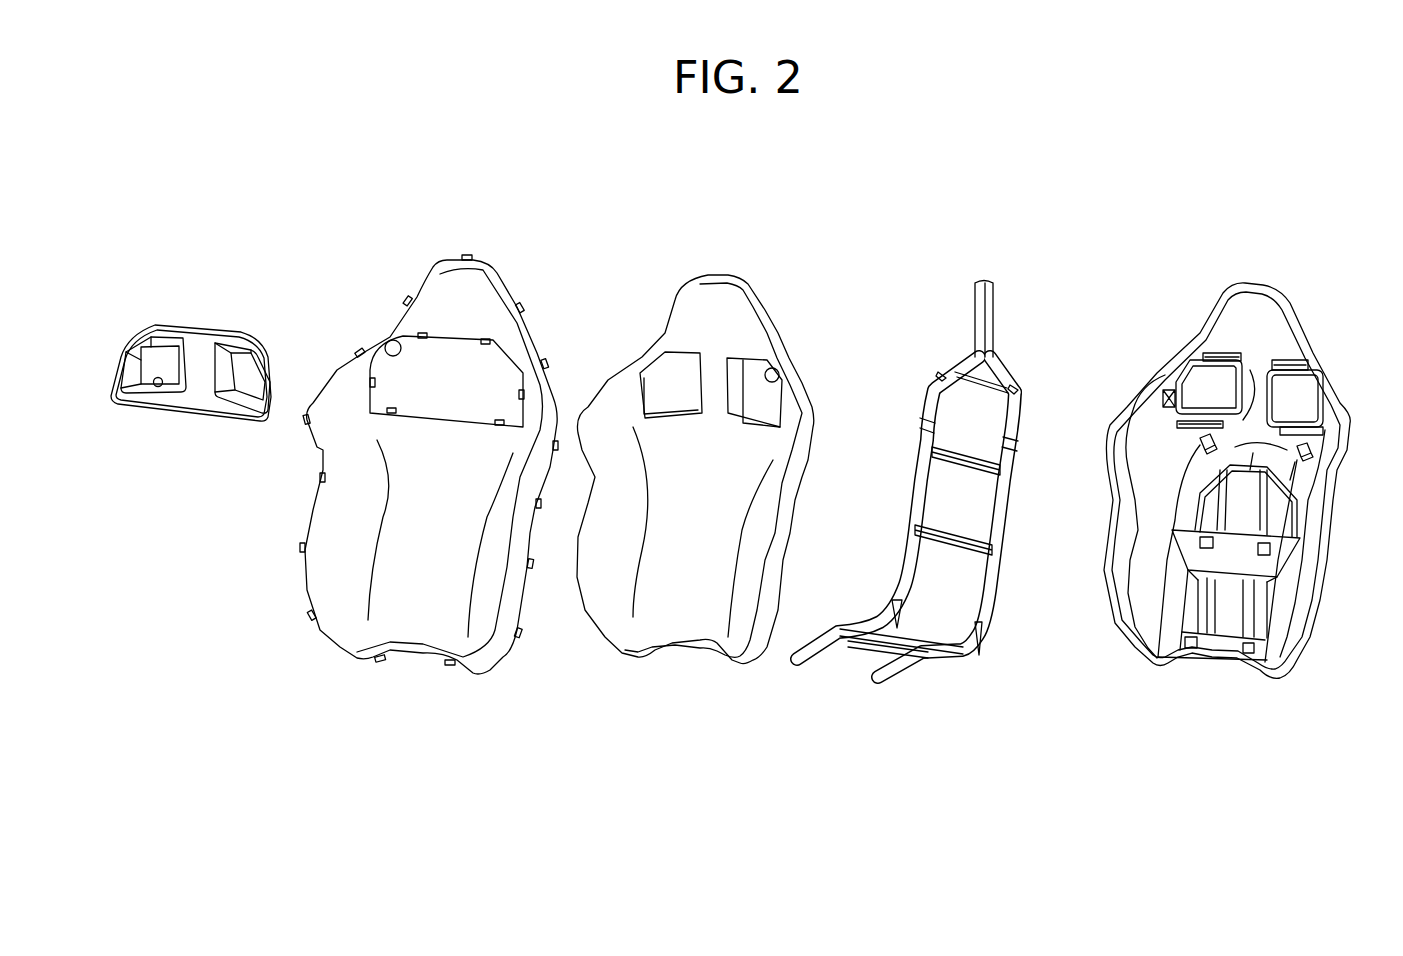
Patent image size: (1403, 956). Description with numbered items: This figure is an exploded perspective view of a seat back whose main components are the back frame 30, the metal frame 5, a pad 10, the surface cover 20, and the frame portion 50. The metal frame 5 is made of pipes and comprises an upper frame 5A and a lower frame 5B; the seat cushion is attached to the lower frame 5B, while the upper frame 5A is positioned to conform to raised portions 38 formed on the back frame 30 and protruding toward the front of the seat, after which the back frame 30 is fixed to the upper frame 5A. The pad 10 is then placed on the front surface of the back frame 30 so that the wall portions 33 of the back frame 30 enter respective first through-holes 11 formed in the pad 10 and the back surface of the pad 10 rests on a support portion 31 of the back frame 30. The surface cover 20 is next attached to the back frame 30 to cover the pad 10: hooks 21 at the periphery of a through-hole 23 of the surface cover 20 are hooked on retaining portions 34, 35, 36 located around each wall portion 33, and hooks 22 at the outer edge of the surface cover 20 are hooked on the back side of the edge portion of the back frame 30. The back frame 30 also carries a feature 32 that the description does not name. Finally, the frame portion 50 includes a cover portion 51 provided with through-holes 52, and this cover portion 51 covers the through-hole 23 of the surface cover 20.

The metal frame 5 is at (929, 420).
The upper frame 5A is at (994, 318).
The lower frame 5B is at (997, 590).
The pad 10 is at (717, 446).
The through-holes 11 is at (776, 379).
The surface cover 20 is at (435, 448).
The hooks 21 is at (423, 330).
The hooks 22 is at (521, 310).
The through-hole 23 is at (395, 347).
The back frame 30 is at (1228, 431).
The support portion 31 is at (1273, 330).
The left opening 32 is at (1203, 380).
The wall portions 33 is at (1283, 362).
The retaining portion 34 is at (1210, 356).
The retaining portion 35 is at (1165, 395).
The retaining portion 36 is at (1190, 427).
The raised portions 38 is at (1313, 452).
The frame portion 50 is at (191, 341).
The cover portion 51 is at (205, 400).
The through-holes 52 is at (157, 386).